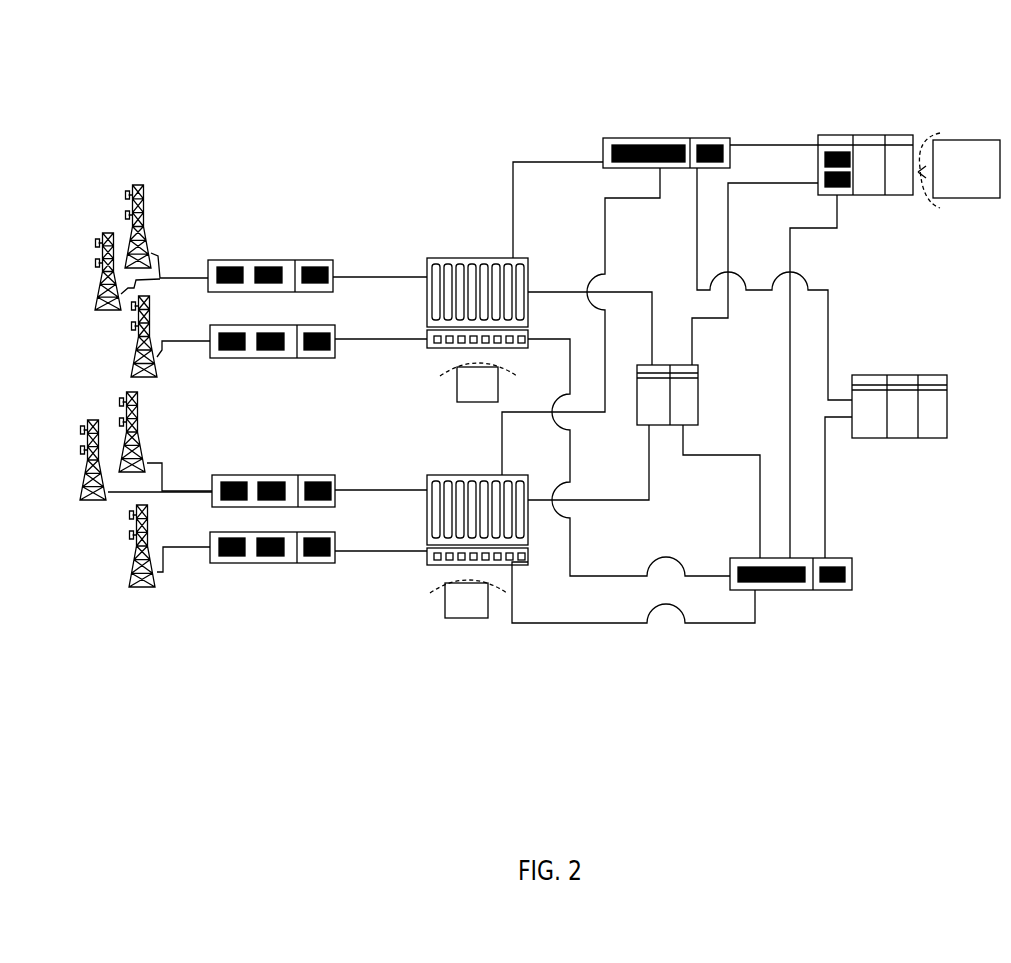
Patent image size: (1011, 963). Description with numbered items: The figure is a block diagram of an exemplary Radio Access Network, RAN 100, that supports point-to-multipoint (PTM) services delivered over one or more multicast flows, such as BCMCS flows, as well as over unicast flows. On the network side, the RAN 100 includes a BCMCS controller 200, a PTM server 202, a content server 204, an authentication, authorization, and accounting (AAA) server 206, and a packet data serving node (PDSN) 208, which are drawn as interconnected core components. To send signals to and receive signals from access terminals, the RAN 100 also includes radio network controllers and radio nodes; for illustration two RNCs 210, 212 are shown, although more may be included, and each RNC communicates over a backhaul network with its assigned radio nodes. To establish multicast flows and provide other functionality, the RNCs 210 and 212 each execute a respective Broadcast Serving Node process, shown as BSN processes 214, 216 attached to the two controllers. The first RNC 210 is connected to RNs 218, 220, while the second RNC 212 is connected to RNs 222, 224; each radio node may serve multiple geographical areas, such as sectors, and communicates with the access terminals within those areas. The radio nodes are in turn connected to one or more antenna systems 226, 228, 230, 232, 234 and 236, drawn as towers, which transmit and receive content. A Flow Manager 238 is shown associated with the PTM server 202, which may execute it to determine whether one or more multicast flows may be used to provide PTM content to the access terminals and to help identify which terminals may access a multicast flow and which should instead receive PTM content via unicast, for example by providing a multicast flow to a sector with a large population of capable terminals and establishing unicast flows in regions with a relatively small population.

The RAN 100 is at (913, 37).
The BCMCS controller 200 is at (732, 137).
The PTM server 202 is at (912, 133).
The content server 204 is at (697, 367).
The authentication, authorization, and accounting (AAA) server 206 is at (947, 383).
The packet data serving node (PDSN) 208 is at (852, 560).
The RNC 210 is at (424, 352).
The RNC 212 is at (424, 566).
The Broadcast Serving Node (BSN) process 214 is at (456, 402).
The Broadcast Serving Node (BSN) process 216 is at (445, 618).
The RN 218 is at (335, 267).
The RN 220 is at (335, 333).
The RN 222 is at (337, 480).
The RN 224 is at (337, 538).
The antenna system 226 is at (145, 223).
The antenna system 228 is at (98, 297).
The antenna system 230 is at (132, 368).
The antenna system 232 is at (148, 440).
The antenna system 234 is at (83, 491).
The antenna system 236 is at (133, 568).
The Flow Manager 238 is at (995, 199).